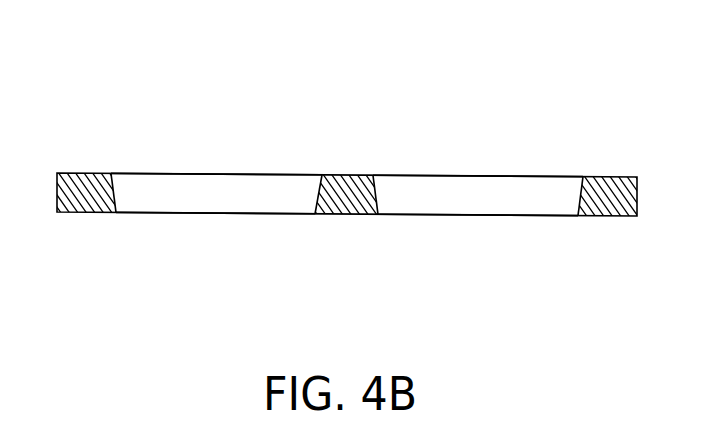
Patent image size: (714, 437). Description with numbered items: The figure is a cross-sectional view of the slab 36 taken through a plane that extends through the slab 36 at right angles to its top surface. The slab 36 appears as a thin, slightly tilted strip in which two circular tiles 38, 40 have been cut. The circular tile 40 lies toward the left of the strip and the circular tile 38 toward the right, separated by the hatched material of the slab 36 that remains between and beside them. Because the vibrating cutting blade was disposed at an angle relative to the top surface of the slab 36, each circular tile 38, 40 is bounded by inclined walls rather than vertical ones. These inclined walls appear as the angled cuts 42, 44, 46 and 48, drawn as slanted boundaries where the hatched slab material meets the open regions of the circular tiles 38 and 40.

The slab 36 is at (151, 132).
The circular tile 38 is at (461, 192).
The circular tile 40 is at (244, 181).
The cut 42 is at (112, 198).
The cut 44 is at (322, 198).
The cut 46 is at (382, 188).
The cut 48 is at (583, 193).